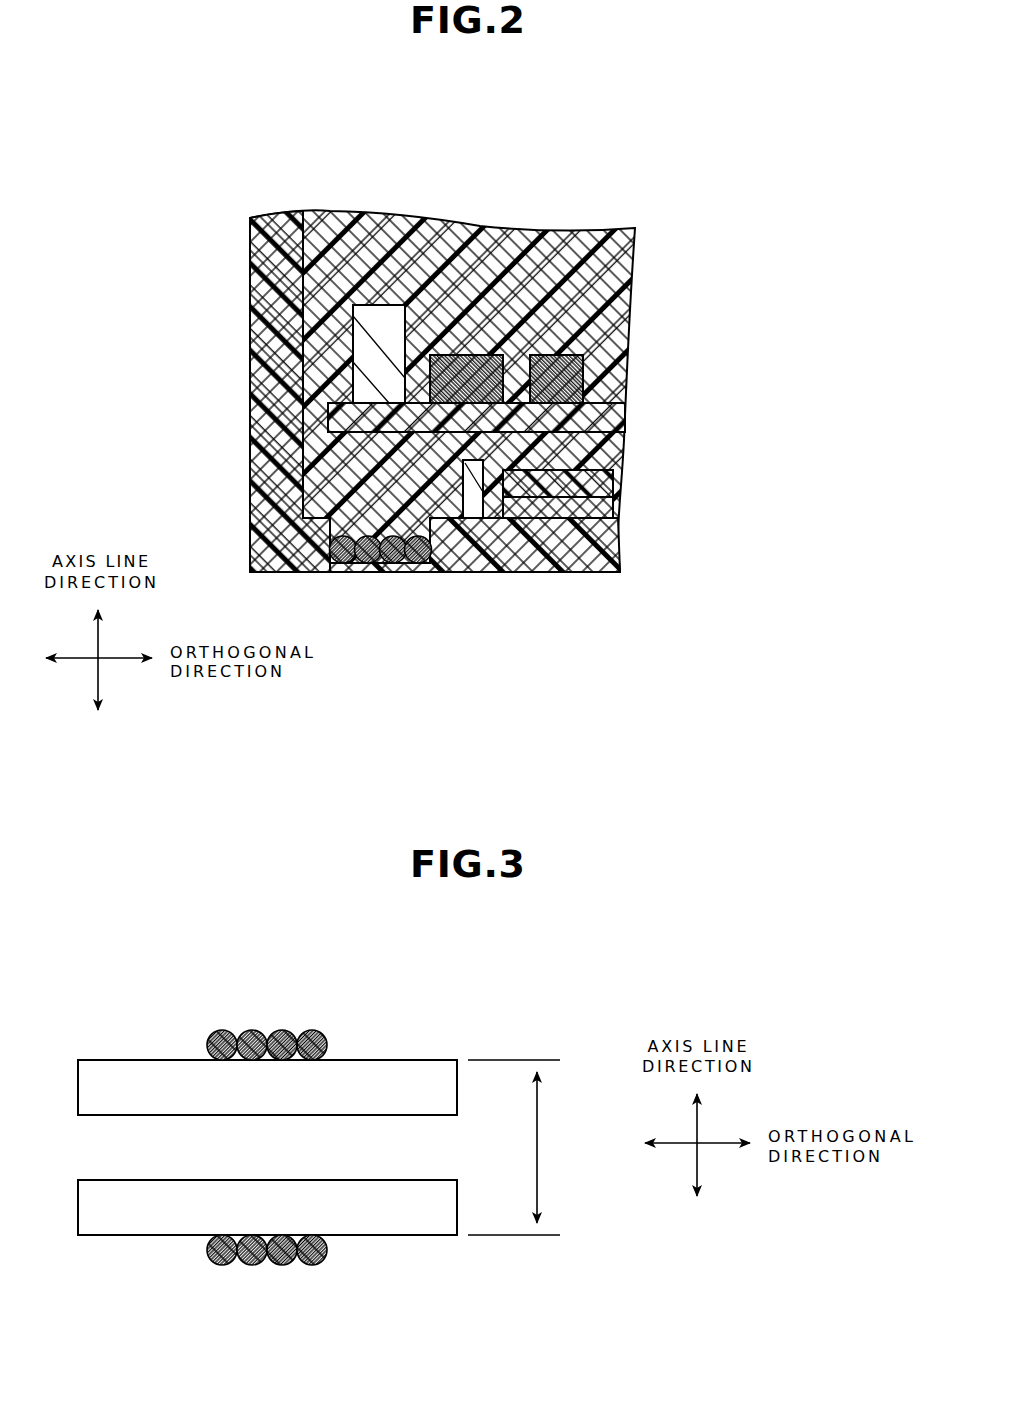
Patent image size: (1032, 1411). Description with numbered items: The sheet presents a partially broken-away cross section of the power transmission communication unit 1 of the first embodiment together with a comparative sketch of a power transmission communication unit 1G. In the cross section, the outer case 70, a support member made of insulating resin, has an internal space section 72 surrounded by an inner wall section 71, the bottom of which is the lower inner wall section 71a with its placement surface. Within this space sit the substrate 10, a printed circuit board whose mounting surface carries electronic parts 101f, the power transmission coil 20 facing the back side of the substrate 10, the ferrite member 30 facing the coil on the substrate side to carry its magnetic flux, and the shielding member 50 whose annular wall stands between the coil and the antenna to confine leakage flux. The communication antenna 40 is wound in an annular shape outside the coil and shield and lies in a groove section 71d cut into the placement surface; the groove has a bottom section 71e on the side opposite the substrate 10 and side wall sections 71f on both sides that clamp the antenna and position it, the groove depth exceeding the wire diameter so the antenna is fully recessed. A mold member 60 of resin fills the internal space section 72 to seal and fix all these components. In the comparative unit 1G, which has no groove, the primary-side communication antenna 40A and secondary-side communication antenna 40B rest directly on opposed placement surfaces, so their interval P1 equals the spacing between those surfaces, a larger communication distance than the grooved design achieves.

In FIG. 2, the power transmission communication unit 1 is at (498, 110).
In FIG. 3, the power transmission communication unit according to the comparative example 1G is at (273, 970).
In FIG. 2, the substrate 10 is at (590, 400).
In FIG. 2, the electronic parts 101f is at (543, 355).
In FIG. 2, the power transmission coil 20 is at (534, 503).
In FIG. 2, the ferrite member 30 is at (596, 465).
In FIG. 2, the communication antenna 40 is at (385, 578).
In FIG. 3, the communication antenna on the primary side 40A is at (272, 1022).
In FIG. 3, the communication antenna on the secondary side 40B is at (270, 1274).
In FIG. 2, the shielding member 50 is at (462, 478).
In FIG. 2, the mold member 60 is at (634, 236).
In FIG. 2, the outer case 70 is at (243, 270).
In FIG. 2, the inner wall section 71 is at (314, 250).
In FIG. 2, the lower inner wall section 71a is at (497, 507).
In FIG. 3, the lower inner wall section 71a is at (428, 1058).
In FIG. 2, the groove section 71d is at (376, 522).
In FIG. 2, the bottom section 71e is at (345, 566).
In FIG. 2, the side wall sections 71f is at (330, 520).
In FIG. 2, the internal space section 72 is at (380, 220).
In FIG. 3, the interval P1 is at (515, 1147).